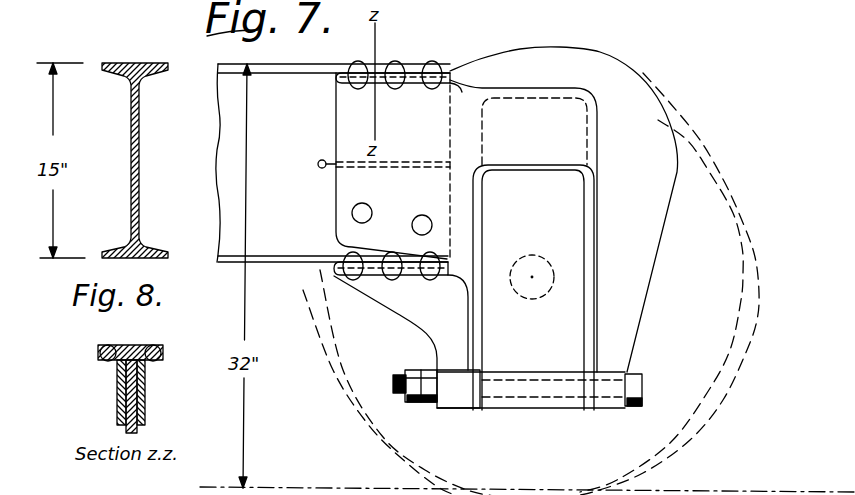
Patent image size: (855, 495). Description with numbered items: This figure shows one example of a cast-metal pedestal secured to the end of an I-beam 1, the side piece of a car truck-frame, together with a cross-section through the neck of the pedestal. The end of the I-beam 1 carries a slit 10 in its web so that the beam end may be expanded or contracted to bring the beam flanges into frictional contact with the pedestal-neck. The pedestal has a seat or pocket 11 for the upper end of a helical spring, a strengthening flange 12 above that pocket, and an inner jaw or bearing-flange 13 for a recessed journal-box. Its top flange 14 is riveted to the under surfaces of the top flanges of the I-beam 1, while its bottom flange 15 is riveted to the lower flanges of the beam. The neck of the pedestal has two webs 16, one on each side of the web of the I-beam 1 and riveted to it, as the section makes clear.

In FIG. 7, the I-beam 1 is at (212, 168).
In FIG. 8, the I-beam 1 is at (130, 345).
In FIG. 7, the slit 10 is at (320, 168).
In FIG. 7, the seat or pocket 11 is at (548, 146).
In FIG. 7, the strengthening flange 12 is at (564, 209).
In FIG. 7, the inner jaw or bearing-flange 13 is at (492, 232).
In FIG. 7, the top flange 14 is at (408, 83).
In FIG. 8, the top flange 14 is at (100, 353).
In FIG. 7, the bottom flange 15 is at (333, 273).
In FIG. 7, the web 16 is at (393, 166).
In FIG. 8, the web 16 is at (117, 402).